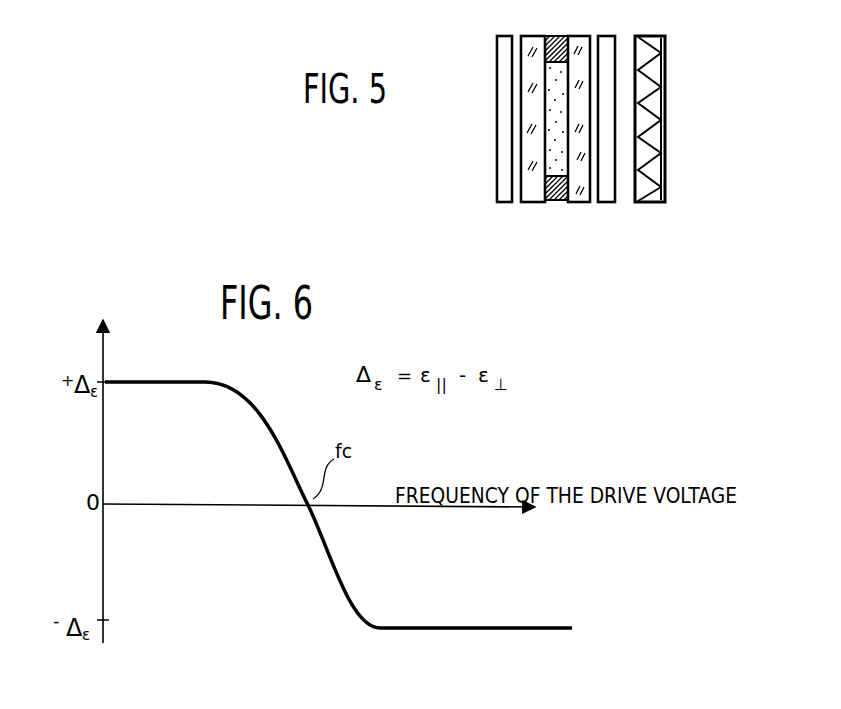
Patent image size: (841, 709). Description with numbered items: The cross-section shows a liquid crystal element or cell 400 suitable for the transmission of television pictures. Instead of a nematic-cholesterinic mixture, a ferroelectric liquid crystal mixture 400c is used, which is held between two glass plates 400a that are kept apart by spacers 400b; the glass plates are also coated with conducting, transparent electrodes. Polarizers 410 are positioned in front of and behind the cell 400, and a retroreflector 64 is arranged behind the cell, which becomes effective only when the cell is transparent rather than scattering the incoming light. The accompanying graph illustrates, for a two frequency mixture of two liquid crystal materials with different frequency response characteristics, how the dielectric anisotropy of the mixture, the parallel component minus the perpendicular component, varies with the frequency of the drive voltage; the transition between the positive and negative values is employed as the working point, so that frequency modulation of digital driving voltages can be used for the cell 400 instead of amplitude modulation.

The liquid crystal element or cell 400 is at (517, 142).
The glass plates 400a is at (570, 200).
The spacers 400b is at (541, 36).
The ferroelectric liquid crystal mixture 400c is at (557, 143).
The polarizers 410 is at (507, 74).
The retroreflector 64 is at (653, 136).